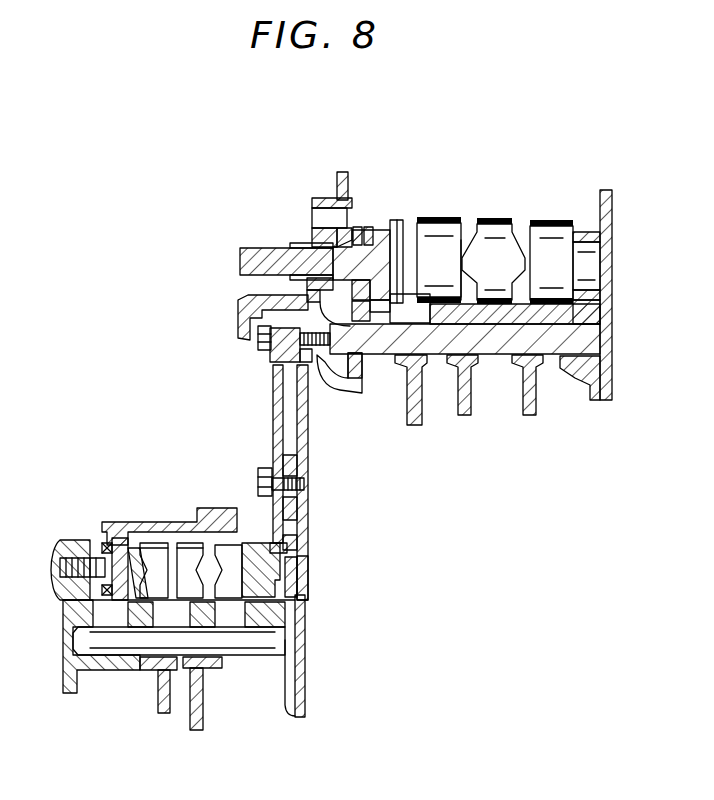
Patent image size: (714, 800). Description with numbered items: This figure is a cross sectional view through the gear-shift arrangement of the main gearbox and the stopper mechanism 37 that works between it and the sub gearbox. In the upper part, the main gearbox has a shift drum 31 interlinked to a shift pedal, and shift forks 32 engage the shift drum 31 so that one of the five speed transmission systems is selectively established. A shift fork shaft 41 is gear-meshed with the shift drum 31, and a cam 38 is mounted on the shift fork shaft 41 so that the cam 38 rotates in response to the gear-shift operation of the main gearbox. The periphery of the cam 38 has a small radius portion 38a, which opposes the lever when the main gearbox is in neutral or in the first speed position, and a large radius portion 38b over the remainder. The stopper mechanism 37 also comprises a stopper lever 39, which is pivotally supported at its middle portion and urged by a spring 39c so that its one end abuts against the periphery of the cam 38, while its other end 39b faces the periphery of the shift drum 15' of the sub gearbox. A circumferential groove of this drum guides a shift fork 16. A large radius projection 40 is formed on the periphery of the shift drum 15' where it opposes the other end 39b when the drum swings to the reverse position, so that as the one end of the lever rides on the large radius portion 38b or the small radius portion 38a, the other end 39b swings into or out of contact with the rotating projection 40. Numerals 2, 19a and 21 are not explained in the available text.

The housing 2 is at (337, 187).
The shift drum 31 is at (487, 232).
The small radius portion 38a is at (258, 300).
The cam 38 is at (270, 355).
The large radius portion 38b is at (300, 370).
The plate 19a is at (273, 378).
The stopper mechanism 37 is at (236, 403).
The stopper lever 39 is at (275, 450).
The spring 39c is at (285, 453).
The large radius projection 40 is at (273, 548).
The other end 39b is at (300, 567).
The shift forks 32 is at (407, 418).
The shift fork shaft 41 is at (441, 355).
The shift drum 15' is at (179, 648).
The shift fork 16 is at (160, 706).
The support 21 is at (203, 714).